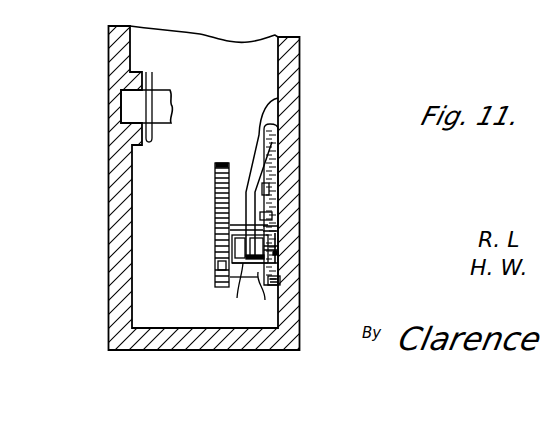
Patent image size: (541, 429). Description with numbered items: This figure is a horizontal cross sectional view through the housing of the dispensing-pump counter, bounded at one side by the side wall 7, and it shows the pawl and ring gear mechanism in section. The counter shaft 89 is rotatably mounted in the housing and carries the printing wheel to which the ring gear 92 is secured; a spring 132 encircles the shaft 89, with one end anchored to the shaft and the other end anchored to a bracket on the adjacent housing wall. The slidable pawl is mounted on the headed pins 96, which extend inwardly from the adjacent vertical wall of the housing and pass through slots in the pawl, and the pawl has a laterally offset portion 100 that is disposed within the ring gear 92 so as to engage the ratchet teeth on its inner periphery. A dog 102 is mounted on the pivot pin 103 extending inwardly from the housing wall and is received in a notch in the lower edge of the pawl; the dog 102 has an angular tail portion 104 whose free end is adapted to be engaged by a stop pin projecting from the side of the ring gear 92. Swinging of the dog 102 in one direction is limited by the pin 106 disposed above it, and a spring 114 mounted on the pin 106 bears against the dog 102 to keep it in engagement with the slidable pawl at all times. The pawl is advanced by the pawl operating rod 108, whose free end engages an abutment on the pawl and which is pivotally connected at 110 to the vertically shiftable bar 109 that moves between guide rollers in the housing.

The side wall 7 is at (97, 234).
The counter shaft 89 is at (164, 100).
The ring gear 92 is at (215, 177).
The headed pins 96 is at (279, 168).
The laterally offset portion 100 is at (212, 248).
The dog 102 is at (278, 248).
The pivot pin 103 is at (266, 217).
The angular tail portion 104 is at (276, 322).
The pin 106 is at (280, 286).
The pawl operating rod 108 is at (261, 167).
The vertically shiftable bar 109 is at (226, 289).
The pivot 110 is at (278, 262).
The spring 114 is at (270, 240).
The spring 132 is at (150, 72).